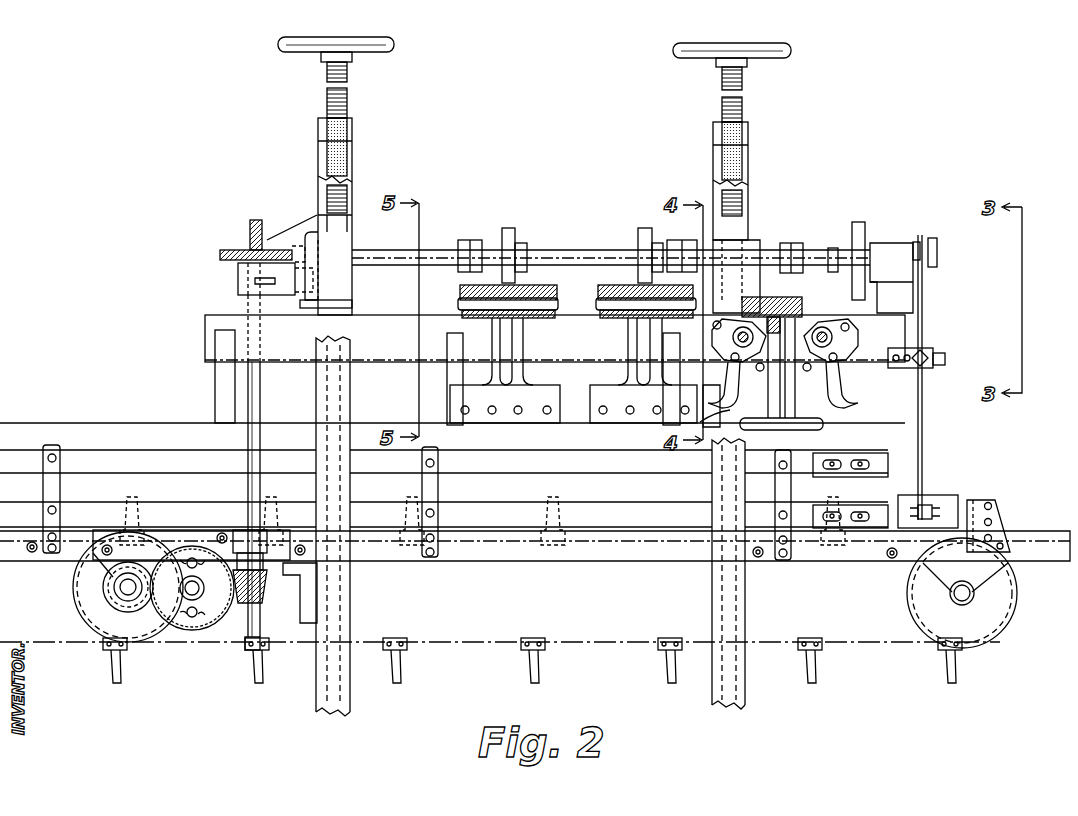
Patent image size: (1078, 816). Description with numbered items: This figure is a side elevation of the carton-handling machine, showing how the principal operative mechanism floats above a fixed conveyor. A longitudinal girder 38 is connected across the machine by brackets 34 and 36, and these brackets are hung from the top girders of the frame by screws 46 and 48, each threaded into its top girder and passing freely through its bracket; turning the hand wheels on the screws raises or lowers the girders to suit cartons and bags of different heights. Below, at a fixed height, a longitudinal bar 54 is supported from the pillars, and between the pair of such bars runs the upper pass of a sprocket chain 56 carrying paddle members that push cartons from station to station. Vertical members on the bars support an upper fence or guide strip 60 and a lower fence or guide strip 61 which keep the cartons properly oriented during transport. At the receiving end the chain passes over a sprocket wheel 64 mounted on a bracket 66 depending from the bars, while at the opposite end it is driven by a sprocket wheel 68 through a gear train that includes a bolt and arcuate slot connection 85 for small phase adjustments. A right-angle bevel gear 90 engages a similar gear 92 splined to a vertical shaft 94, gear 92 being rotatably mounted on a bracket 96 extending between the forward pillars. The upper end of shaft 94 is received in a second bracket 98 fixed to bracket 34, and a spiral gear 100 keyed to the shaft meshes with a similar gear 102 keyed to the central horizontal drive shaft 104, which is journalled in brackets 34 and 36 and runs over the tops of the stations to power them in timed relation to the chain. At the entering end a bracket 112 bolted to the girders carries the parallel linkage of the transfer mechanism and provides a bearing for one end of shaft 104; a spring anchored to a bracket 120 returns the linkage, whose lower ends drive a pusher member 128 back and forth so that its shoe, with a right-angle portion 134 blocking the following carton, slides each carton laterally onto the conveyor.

The bracket 34 is at (345, 290).
The bracket 36 is at (757, 242).
The longitudinal girder 38 is at (213, 336).
The screw 46 is at (347, 108).
The screw 48 is at (742, 110).
The longitudinal bar 54 is at (1040, 538).
The sprocket chain 56 is at (488, 640).
The upper fence or guide strip 60 is at (174, 455).
The lower fence or guide strip 61 is at (186, 500).
The sprocket wheel 64 is at (1006, 605).
The bracket 66 is at (995, 572).
The sprocket wheel 68 is at (85, 588).
The bolt and arcuate slot connection 85 is at (208, 612).
The right-angle bevel gear 90 is at (262, 606).
The bevel gear 92 is at (264, 566).
The vertical shaft 94 is at (258, 410).
The bracket 96 is at (317, 603).
The second bracket 98 is at (238, 286).
The spiral gear 100 is at (220, 255).
The spiral gear 102 is at (256, 220).
The horizontal drive shaft 104 is at (612, 252).
The bracket 112 is at (908, 314).
The bracket 120 is at (910, 368).
The pusher member 128 is at (928, 503).
The portion of shoe 134 is at (966, 500).